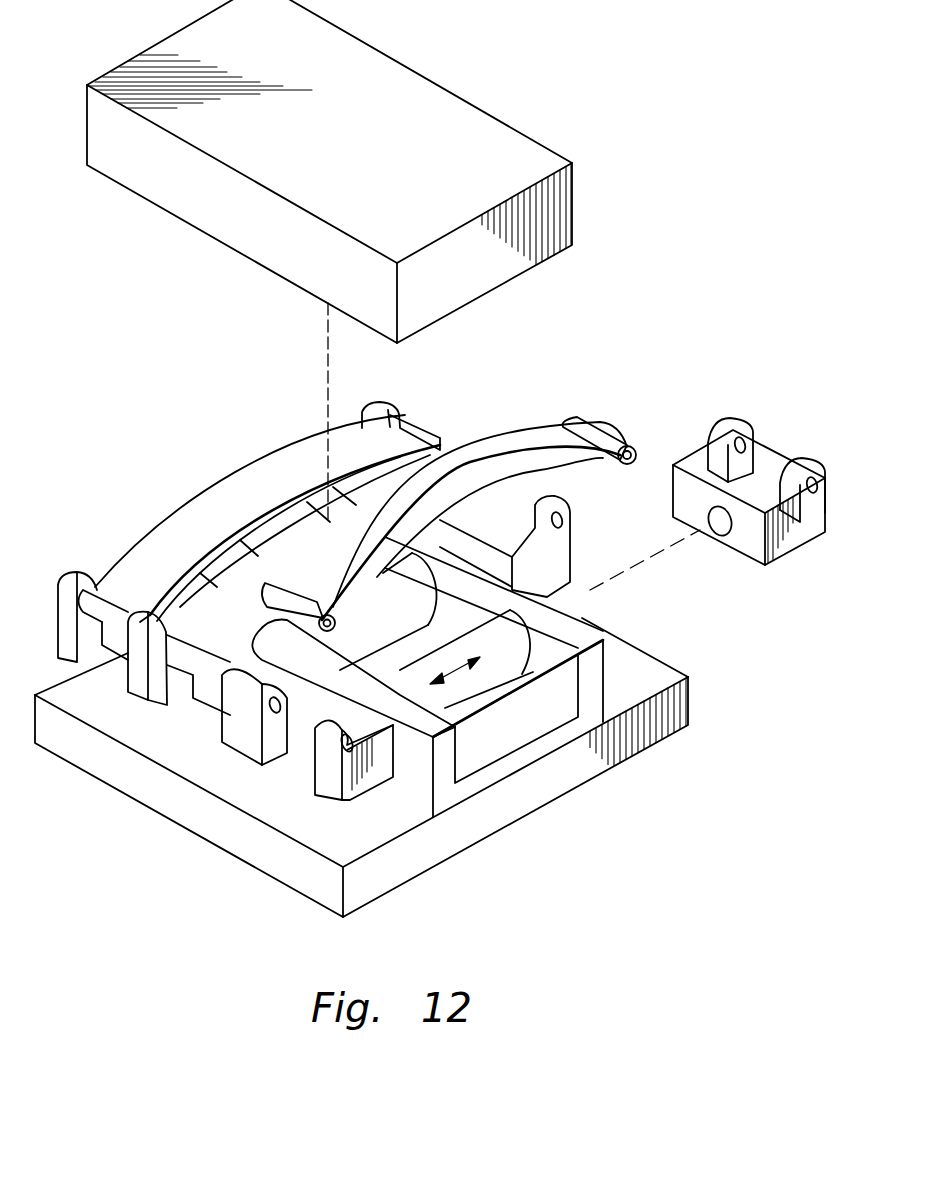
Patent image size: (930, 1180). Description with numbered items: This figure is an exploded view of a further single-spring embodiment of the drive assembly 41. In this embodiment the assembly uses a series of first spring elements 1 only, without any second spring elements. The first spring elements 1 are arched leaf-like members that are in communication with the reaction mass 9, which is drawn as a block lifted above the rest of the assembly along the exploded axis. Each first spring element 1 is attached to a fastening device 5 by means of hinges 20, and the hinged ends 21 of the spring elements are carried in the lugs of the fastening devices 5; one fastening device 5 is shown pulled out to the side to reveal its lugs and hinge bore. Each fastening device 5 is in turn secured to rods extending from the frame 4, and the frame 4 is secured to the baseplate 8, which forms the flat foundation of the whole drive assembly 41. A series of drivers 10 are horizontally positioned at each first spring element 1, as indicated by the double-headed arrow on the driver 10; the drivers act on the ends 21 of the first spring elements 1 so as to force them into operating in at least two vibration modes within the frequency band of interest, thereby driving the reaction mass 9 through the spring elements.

The reaction mass 9 is at (408, 68).
The drive assembly 41 is at (710, 159).
The baseplate 8 is at (82, 757).
The frame 4 is at (583, 640).
The driver 10 is at (455, 685).
The first spring element 1 is at (193, 512).
The end 21 is at (297, 580).
The hinge 20 is at (115, 613).
The fastening device 5 is at (57, 615).